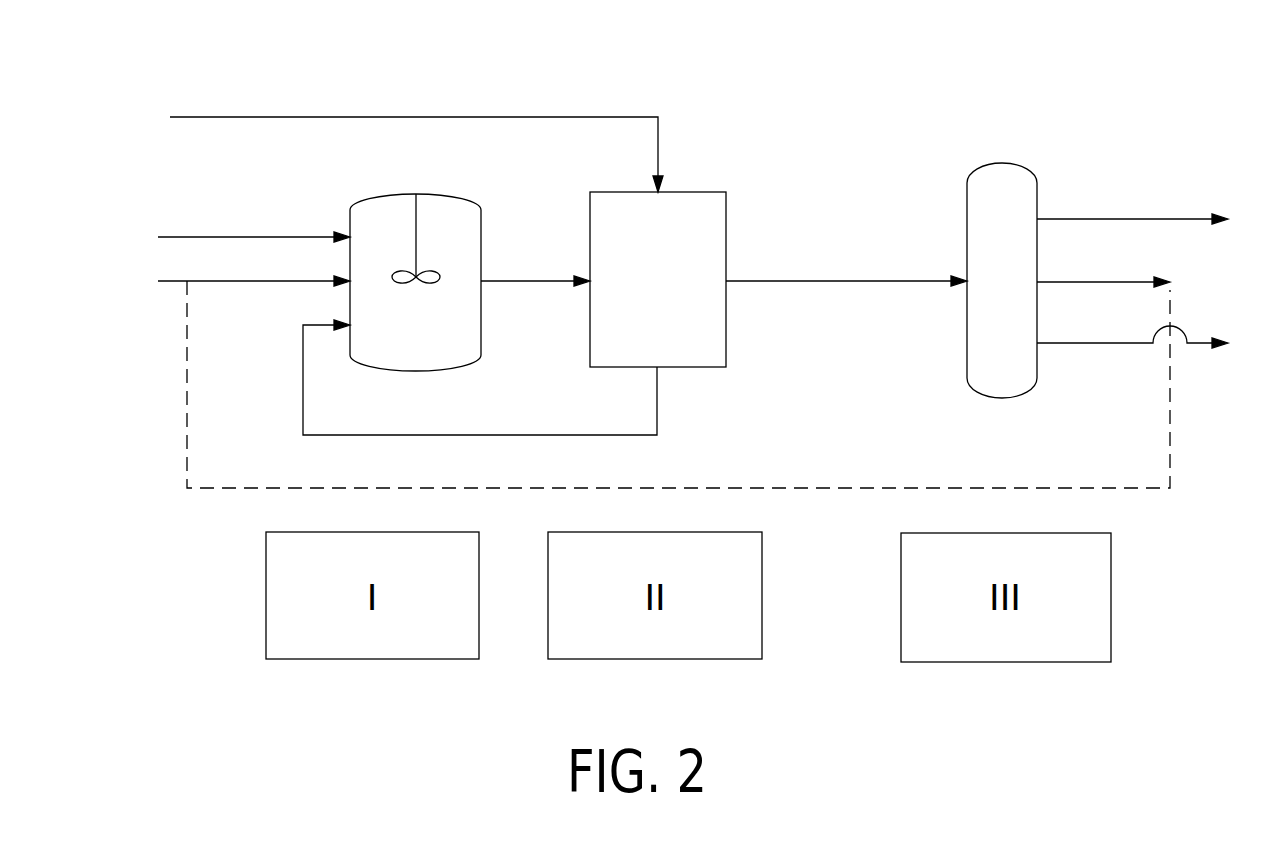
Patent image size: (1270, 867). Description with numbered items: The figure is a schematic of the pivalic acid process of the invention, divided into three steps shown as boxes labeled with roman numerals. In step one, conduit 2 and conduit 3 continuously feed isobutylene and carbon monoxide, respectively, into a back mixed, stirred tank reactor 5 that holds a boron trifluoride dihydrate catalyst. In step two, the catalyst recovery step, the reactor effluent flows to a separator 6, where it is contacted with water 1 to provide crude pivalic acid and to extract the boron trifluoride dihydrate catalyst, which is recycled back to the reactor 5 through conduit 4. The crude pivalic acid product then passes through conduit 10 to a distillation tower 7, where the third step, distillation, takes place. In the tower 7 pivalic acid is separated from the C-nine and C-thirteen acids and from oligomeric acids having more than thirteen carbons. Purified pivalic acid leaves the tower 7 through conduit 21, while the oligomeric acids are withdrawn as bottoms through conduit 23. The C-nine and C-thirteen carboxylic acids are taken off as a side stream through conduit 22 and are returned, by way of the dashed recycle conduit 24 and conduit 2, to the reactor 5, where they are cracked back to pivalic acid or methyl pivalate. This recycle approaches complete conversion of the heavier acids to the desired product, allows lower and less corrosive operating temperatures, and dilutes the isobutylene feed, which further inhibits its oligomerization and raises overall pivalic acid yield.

The water 1 is at (373, 117).
The conduit 2 is at (262, 290).
The conduit 3 is at (252, 237).
The conduit 4 is at (303, 400).
The stirred tank reactor 5 is at (426, 351).
The separator 6 is at (665, 316).
The distillation tower 7 is at (1012, 302).
The conduit 10 is at (812, 281).
The conduit 21 is at (1053, 219).
The conduit 22 is at (1078, 282).
The conduit 23 is at (1055, 343).
The conduit 24 is at (800, 488).